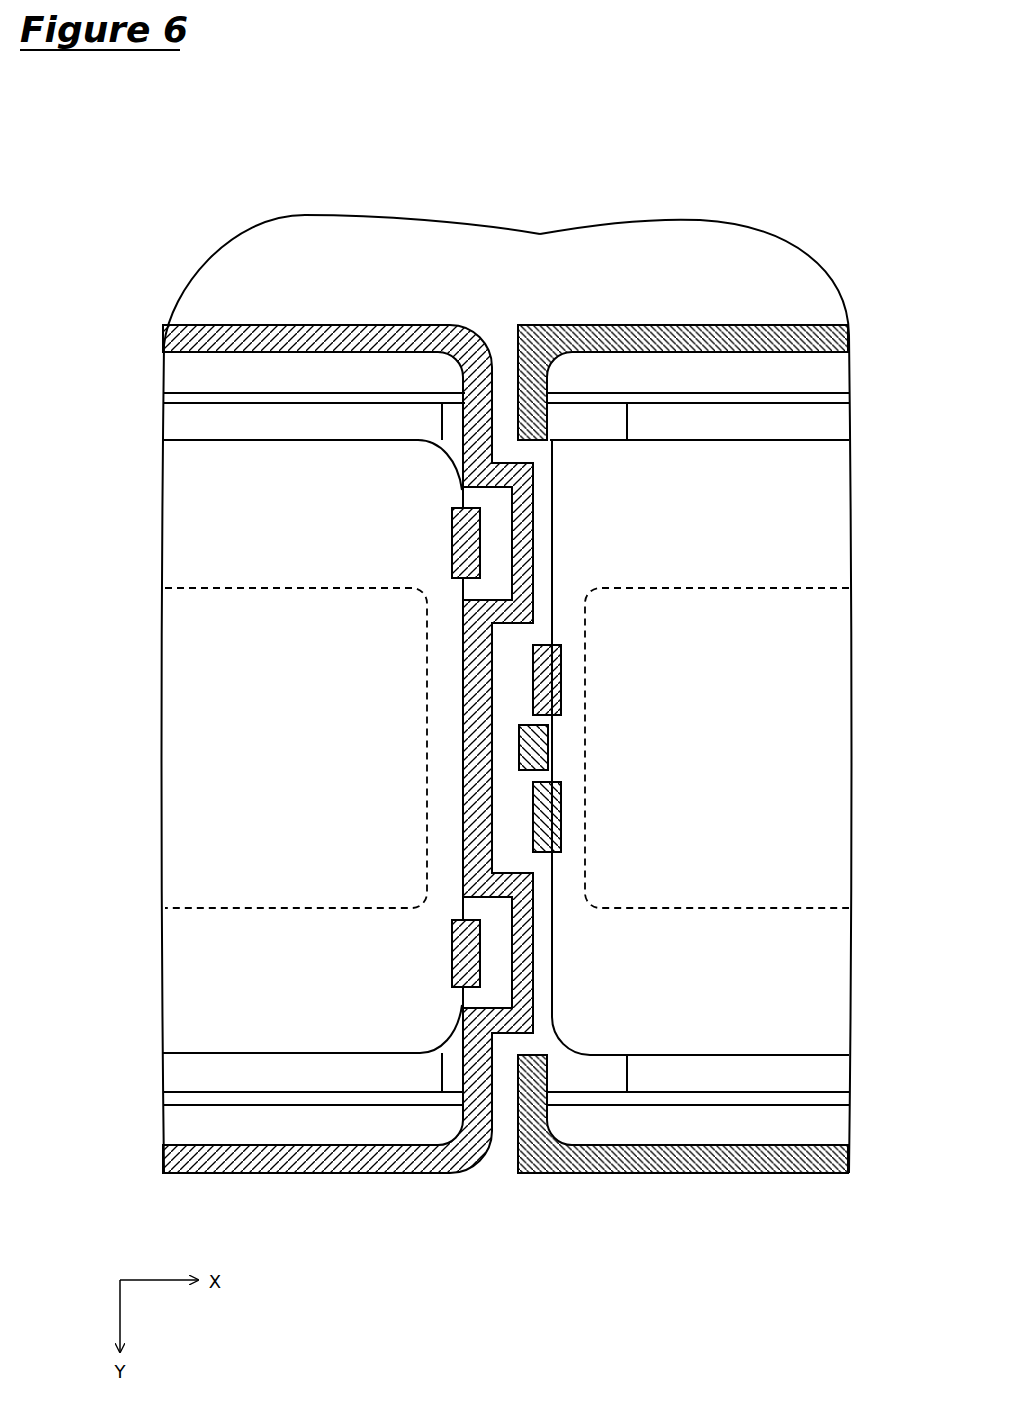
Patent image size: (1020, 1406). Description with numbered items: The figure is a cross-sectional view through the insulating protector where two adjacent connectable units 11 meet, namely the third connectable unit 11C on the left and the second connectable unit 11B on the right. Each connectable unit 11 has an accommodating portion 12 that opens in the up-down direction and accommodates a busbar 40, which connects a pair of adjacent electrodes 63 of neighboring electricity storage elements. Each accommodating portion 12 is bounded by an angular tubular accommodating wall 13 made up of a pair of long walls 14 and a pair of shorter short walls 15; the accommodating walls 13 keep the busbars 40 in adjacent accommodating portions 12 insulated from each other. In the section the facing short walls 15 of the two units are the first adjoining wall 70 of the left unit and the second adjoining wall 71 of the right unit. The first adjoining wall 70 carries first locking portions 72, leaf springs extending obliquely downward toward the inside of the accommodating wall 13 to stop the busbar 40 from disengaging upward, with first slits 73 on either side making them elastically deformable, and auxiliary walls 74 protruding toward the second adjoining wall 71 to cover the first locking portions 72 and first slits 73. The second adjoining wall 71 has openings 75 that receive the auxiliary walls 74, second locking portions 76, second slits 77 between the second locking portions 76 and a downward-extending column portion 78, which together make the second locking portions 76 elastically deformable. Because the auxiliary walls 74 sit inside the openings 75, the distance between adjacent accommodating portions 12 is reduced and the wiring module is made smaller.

The connectable unit 11 is at (507, 637).
The third connectable unit 11C is at (278, 333).
The second connectable unit 11B is at (668, 333).
The accommodating portion 12 is at (205, 352).
The accommodating wall 13 is at (310, 328).
The long wall 14 is at (222, 333).
The short wall 15 is at (505, 793).
The busbar 40 is at (210, 518).
The electrode 63 is at (210, 727).
The first adjoining wall 70 is at (462, 1005).
The second adjoining wall 71 is at (540, 1072).
The first locking portion 72 is at (460, 545).
The first slit 73 is at (470, 490).
The auxiliary wall 74 is at (533, 505).
The opening 75 is at (536, 442).
The second locking portion 76 is at (553, 672).
The second slit 77 is at (545, 727).
The column portion 78 is at (540, 745).